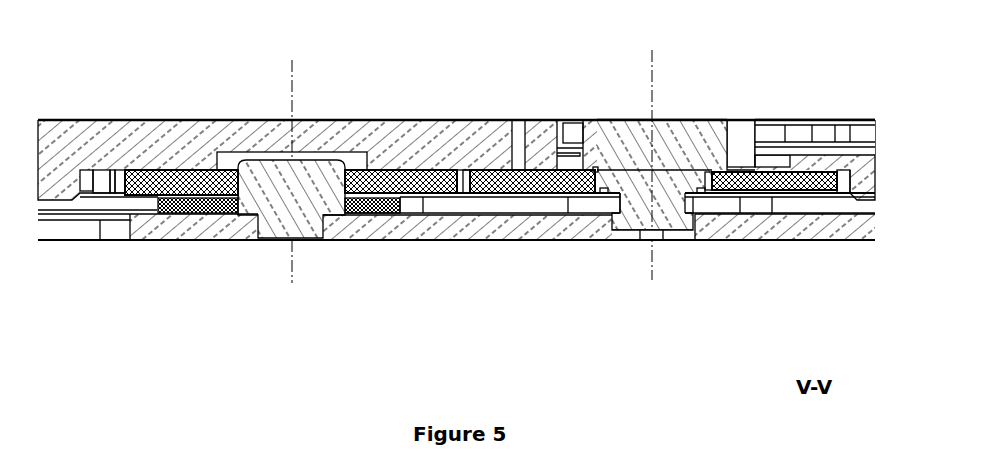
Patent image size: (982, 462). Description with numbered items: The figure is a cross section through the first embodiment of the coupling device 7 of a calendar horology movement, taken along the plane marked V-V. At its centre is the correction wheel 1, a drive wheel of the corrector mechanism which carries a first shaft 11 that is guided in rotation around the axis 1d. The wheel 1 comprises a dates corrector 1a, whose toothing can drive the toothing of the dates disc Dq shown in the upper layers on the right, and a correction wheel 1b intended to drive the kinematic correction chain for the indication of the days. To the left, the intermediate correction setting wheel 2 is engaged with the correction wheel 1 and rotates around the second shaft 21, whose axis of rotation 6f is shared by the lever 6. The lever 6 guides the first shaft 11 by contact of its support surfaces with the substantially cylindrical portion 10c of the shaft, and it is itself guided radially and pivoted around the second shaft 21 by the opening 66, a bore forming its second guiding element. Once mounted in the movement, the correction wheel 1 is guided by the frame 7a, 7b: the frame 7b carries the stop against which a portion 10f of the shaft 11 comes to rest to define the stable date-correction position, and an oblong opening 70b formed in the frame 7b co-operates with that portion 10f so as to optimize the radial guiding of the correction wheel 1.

The coupling device 7 is at (443, 96).
The frame 7a is at (61, 128).
The frame 7b is at (183, 226).
The intermediate correction setting wheel 2 is at (153, 178).
The second shaft 21 is at (331, 178).
The axis of rotation 6f is at (290, 92).
The correction wheel 1 is at (697, 101).
The dates corrector 1a is at (598, 123).
The axis 1d is at (650, 70).
The correction wheel 1b is at (832, 178).
The dates disc Dq is at (777, 132).
The lever 6 is at (146, 205).
The opening 66 is at (227, 220).
The cylindrical portion 10c is at (620, 205).
The first shaft 11 is at (645, 188).
The oblong opening 70b is at (687, 254).
The portion of the shaft 10f is at (695, 220).